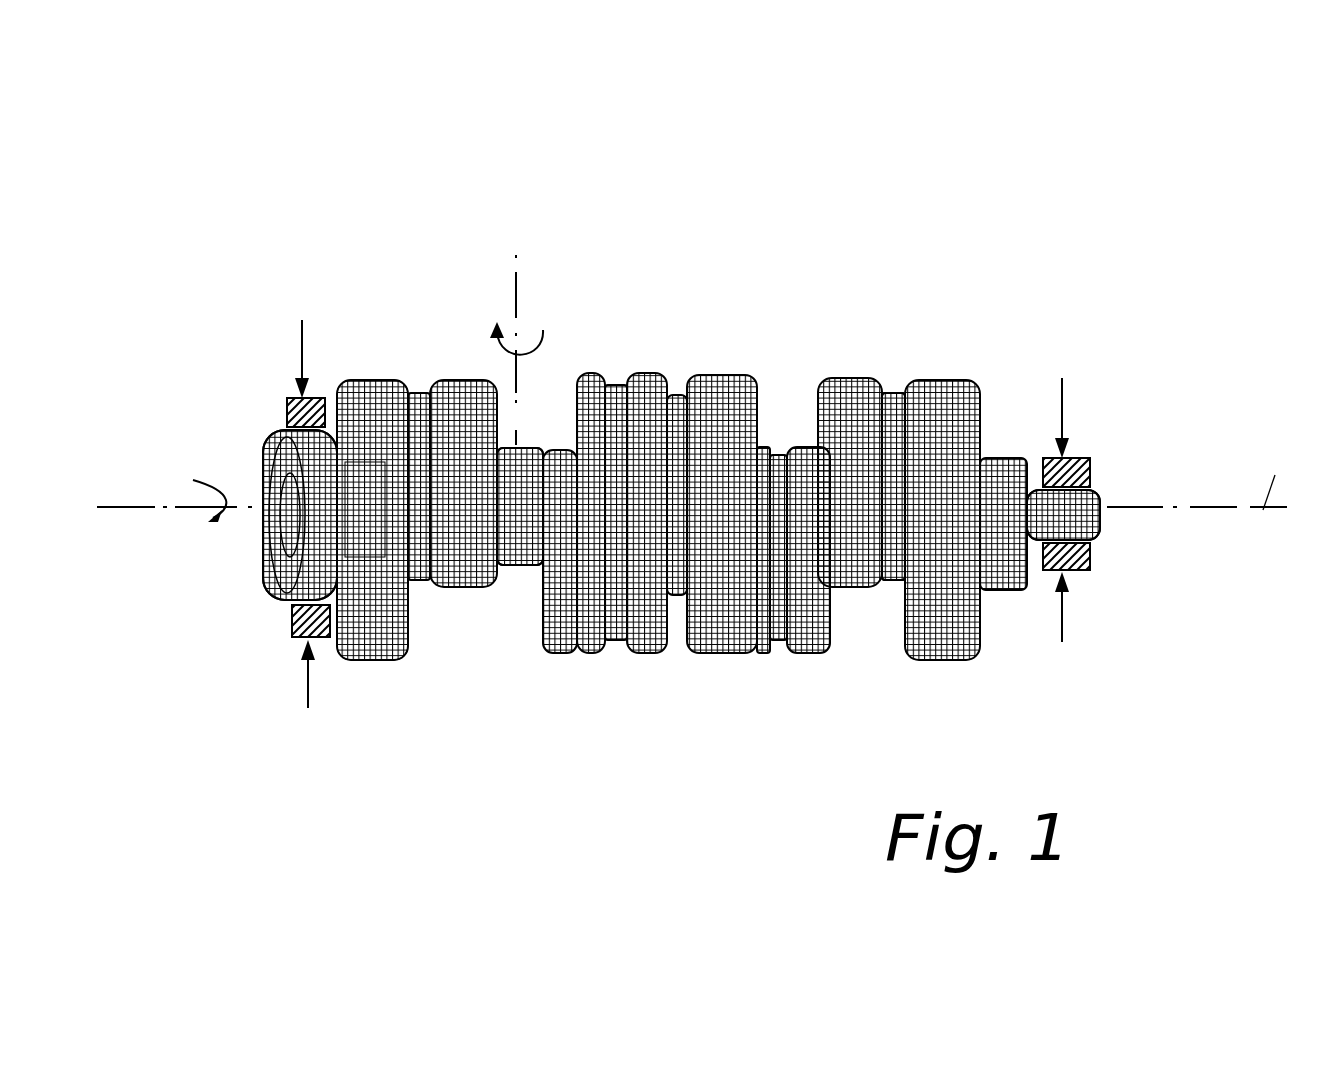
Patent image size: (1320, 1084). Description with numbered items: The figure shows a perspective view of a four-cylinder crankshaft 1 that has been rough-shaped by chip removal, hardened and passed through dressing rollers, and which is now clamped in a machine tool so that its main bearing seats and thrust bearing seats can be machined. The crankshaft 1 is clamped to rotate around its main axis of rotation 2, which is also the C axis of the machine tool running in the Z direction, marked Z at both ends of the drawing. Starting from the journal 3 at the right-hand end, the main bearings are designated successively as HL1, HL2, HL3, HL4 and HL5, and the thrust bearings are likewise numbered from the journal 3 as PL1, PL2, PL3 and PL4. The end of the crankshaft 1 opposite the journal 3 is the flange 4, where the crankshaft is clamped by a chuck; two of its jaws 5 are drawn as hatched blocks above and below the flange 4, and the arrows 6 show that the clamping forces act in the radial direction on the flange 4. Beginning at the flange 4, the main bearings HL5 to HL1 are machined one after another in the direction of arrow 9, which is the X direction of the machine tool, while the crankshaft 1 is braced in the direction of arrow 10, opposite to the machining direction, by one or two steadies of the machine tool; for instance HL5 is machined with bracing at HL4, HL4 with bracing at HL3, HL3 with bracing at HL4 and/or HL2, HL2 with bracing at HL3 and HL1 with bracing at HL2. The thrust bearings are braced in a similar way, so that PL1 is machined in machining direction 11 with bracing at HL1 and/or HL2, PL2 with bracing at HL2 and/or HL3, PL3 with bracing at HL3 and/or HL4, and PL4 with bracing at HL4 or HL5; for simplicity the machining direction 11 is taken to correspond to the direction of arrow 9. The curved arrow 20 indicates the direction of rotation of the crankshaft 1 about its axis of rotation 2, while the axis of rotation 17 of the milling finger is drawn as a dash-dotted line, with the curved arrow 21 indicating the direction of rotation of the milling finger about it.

The crankshaft 1 is at (995, 274).
The main axis of rotation 2 is at (121, 556).
The journal 3 is at (1100, 493).
The flange 4 is at (271, 568).
The jaws 5 is at (287, 413).
The arrows 6 is at (680, 519).
The arrow 9 is at (362, 463).
The arrow 10 is at (515, 580).
The machining direction 11 is at (896, 383).
The axis of rotation of milling finger 17 is at (518, 327).
The curved arrow 20 is at (203, 480).
The curved arrow 21 is at (531, 325).
The Z direction Z is at (695, 518).
The main bearing HL1 is at (1007, 499).
The main bearing HL2 is at (783, 531).
The main bearing HL3 is at (663, 469).
The main bearing HL4 is at (524, 487).
The main bearing HL5 is at (368, 501).
The thrust bearing PL1 is at (892, 452).
The thrust bearing PL2 is at (770, 577).
The thrust bearing PL3 is at (607, 542).
The thrust bearing PL4 is at (415, 452).